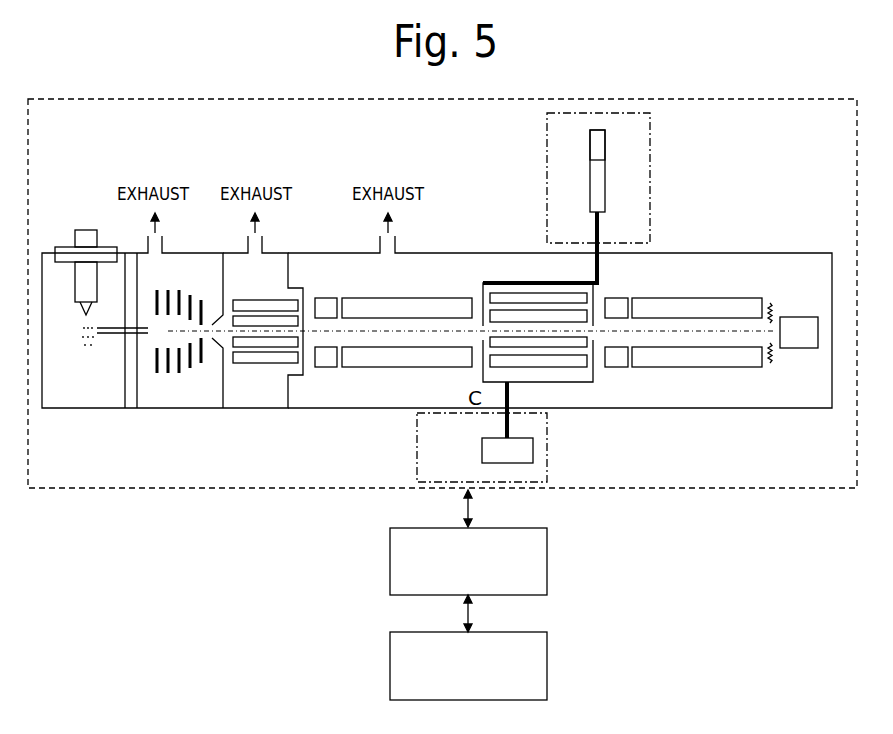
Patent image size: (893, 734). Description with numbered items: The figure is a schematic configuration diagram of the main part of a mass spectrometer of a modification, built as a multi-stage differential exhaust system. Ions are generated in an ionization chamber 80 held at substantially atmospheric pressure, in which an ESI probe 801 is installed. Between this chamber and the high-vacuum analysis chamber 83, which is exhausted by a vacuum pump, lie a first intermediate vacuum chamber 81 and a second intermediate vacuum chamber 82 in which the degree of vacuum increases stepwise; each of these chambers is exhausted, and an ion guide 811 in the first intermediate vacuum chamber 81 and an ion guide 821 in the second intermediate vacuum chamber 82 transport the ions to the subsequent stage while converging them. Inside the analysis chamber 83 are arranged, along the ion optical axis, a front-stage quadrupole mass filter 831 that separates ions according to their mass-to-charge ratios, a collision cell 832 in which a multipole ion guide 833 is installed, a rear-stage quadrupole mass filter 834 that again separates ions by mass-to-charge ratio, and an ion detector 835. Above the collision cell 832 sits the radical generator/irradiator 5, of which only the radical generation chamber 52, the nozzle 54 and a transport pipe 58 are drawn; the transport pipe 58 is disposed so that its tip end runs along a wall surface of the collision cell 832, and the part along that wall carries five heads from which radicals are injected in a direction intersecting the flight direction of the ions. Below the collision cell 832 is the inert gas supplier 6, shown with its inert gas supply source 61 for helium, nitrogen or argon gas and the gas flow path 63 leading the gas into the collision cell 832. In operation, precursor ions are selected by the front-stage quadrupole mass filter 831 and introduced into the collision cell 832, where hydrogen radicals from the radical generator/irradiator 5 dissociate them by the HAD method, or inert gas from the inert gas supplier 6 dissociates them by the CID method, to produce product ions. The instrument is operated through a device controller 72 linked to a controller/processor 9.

The radical generator/irradiator 5 is at (652, 143).
The radical generation chamber 52 is at (597, 171).
The nozzle 54 is at (590, 158).
The transport pipe 58 is at (600, 237).
The inert gas supplier 6 is at (548, 455).
The inert gas supply source 61 is at (482, 452).
The gas flow path 63 is at (500, 427).
The device controller 72 is at (547, 558).
The controller/processor 9 is at (547, 662).
The ionization chamber 80 is at (73, 398).
The ESI probe 801 is at (77, 283).
The first intermediate vacuum chamber 81 is at (152, 398).
The ion guide 811 is at (187, 285).
The second intermediate vacuum chamber 82 is at (238, 398).
The ion guide 821 is at (273, 298).
The analysis chamber 83 is at (363, 397).
The front-stage quadrupole mass filter 831 is at (423, 297).
The collision cell 832 is at (588, 382).
The multipole ion guide 833 is at (543, 373).
The rear-stage quadrupole mass filter 834 is at (690, 297).
The ion detector 835 is at (800, 316).